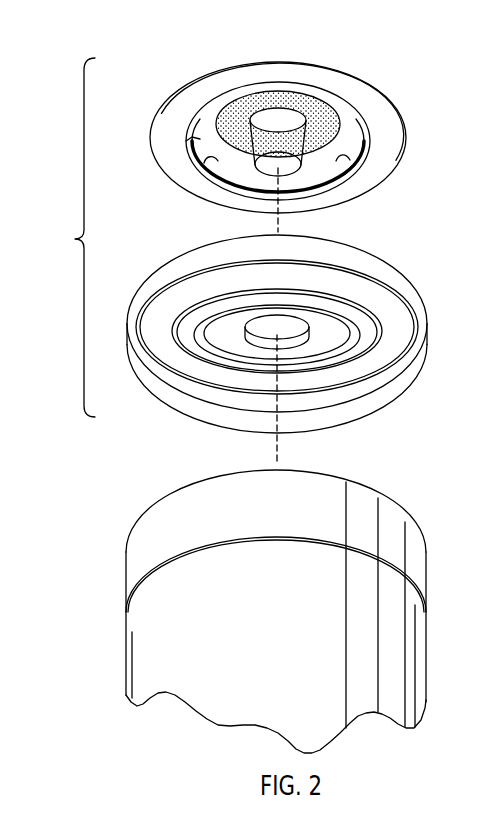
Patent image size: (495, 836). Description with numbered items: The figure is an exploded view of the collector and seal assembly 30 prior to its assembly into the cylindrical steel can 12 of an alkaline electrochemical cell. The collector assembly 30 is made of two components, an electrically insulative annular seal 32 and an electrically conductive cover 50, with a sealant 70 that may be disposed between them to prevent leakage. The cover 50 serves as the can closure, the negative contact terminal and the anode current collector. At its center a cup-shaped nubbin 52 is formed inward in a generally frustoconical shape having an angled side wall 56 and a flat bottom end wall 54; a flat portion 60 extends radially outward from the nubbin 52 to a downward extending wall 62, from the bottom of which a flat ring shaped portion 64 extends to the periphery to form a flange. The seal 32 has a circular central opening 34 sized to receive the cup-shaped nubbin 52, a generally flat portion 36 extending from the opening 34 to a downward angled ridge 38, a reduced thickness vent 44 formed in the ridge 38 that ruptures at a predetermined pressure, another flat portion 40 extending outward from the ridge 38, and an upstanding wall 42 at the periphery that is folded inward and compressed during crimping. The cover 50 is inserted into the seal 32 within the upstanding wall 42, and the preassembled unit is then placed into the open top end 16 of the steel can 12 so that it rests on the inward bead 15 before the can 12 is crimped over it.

The steel can 12 is at (148, 642).
The inward bead 15 is at (135, 585).
The open top end 16 is at (404, 492).
The collector and seal assembly 30 is at (72, 237).
The annular seal 32 is at (404, 258).
The central opening 34 is at (260, 345).
The flat portion 36 is at (325, 345).
The downward angled ridge 38 is at (367, 352).
The flat portion 40 is at (408, 343).
The upstanding wall 42 is at (408, 293).
The reduced thickness vent 44 is at (203, 160).
The electrically conductive cover 50 is at (382, 53).
The cup-shaped nubbin 52 is at (232, 174).
The flat bottom end wall 54 is at (287, 170).
The angled side wall 56 is at (279, 137).
The flat portion 60 is at (353, 135).
The downward extending wall 62 is at (202, 138).
The flat ring shaped portion 64 is at (385, 163).
The sealant 70 is at (330, 130).